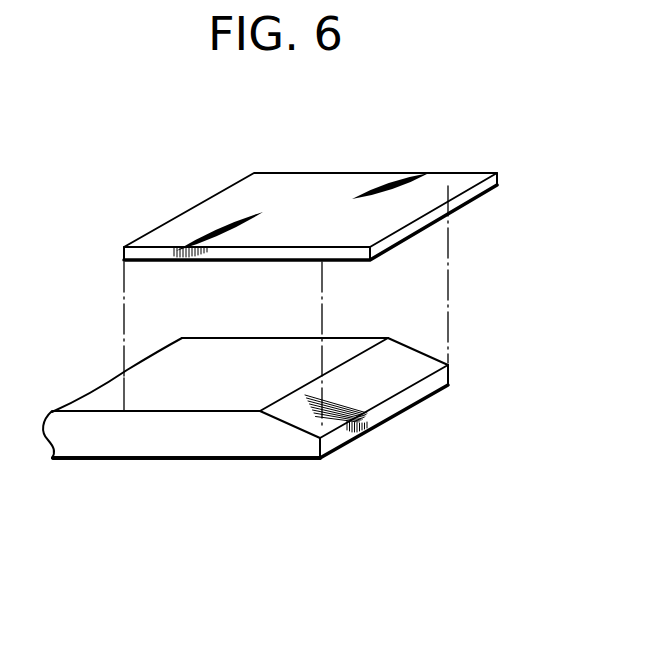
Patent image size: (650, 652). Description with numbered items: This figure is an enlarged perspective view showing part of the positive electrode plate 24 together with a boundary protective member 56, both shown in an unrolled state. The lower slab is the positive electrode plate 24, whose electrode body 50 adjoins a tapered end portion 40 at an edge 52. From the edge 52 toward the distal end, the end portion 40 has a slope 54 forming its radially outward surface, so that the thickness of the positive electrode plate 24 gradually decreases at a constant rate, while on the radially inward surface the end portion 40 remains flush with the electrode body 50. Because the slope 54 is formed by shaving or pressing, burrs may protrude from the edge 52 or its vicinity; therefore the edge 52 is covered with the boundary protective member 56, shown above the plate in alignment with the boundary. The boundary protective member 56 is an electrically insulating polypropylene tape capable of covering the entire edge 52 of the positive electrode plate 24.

The boundary protective member 56 is at (302, 190).
The edge 52 is at (352, 357).
The slope 54 is at (390, 388).
The electrode body 50 is at (137, 440).
The end portion 40 is at (305, 442).
The positive electrode plate 24 is at (210, 504).